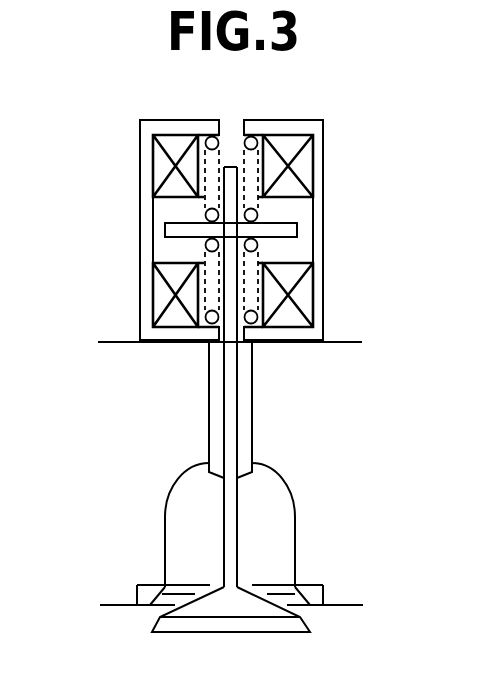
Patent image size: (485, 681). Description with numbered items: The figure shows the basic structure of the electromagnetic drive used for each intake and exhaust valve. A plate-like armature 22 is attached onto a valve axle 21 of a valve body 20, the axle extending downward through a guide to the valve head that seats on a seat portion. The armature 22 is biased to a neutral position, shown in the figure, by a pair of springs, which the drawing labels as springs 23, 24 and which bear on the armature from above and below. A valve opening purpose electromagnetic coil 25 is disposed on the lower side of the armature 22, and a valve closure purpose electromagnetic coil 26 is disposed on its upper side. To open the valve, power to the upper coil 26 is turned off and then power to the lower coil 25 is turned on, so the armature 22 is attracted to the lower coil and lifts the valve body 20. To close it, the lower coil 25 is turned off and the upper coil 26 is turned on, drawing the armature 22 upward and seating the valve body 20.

The valve body 20 is at (308, 622).
The valve axle 21 is at (238, 522).
The armature 22 is at (297, 229).
The upper spring 23 is at (203, 204).
The lower spring 24 is at (203, 255).
The valve opening purpose electromagnetic coil 25 is at (163, 296).
The valve closure purpose electromagnetic coil 26 is at (165, 167).